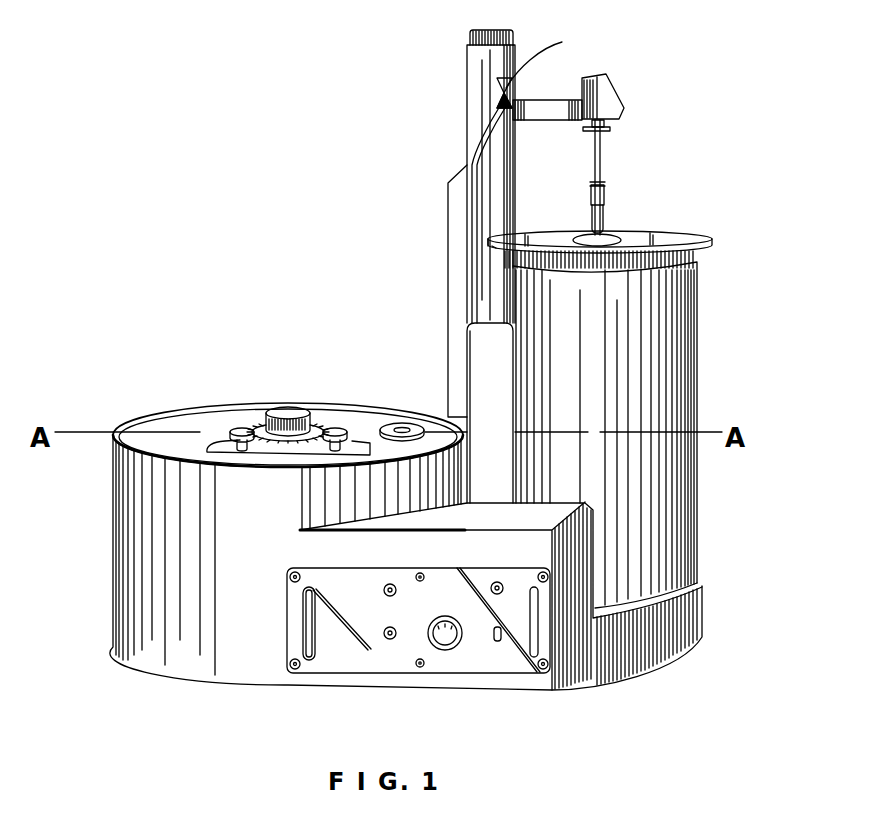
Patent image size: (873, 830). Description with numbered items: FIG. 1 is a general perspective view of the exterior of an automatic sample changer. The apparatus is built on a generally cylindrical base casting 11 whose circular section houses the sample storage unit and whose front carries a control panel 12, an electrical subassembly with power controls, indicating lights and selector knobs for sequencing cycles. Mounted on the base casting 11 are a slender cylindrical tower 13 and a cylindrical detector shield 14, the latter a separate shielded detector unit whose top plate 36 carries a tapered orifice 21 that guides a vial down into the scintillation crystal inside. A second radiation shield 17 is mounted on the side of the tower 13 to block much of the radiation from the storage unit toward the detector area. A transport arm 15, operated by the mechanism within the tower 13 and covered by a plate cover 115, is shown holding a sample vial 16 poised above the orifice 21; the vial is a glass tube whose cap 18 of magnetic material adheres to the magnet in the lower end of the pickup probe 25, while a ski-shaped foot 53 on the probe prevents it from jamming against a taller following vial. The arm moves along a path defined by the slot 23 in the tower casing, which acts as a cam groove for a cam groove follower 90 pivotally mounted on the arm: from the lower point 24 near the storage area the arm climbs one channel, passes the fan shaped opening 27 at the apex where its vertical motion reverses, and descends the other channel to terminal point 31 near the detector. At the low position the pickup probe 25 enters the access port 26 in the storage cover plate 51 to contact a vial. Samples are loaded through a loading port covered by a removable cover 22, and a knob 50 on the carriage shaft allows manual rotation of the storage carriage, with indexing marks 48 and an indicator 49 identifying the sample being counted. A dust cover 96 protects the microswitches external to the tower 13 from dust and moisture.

The base casting 11 is at (222, 674).
The front control panel 12 is at (357, 665).
The tower 13 is at (468, 82).
The detector shield 14 is at (698, 343).
The transport arm 15 is at (565, 100).
The sample vial 16 is at (602, 213).
The second radiation shield 17 is at (477, 353).
The cap 18 is at (600, 196).
The orifice 21 is at (614, 240).
The removable cover 22 is at (222, 448).
The slot 23 is at (470, 160).
The point 24 is at (465, 384).
The pickup probe 25 is at (602, 160).
The access port 26 is at (403, 426).
The fan shaped opening 27 is at (548, 58).
The terminal point 31 is at (514, 231).
The top plate 36 is at (713, 241).
The indexing marks 48 is at (272, 427).
The indicator 49 is at (292, 444).
The knob 50 is at (292, 410).
The top plate 51 is at (160, 427).
The foot 53 is at (593, 184).
The cam groove follower 90 is at (513, 92).
The dust cover 96 is at (450, 228).
The plate cover 115 is at (610, 82).